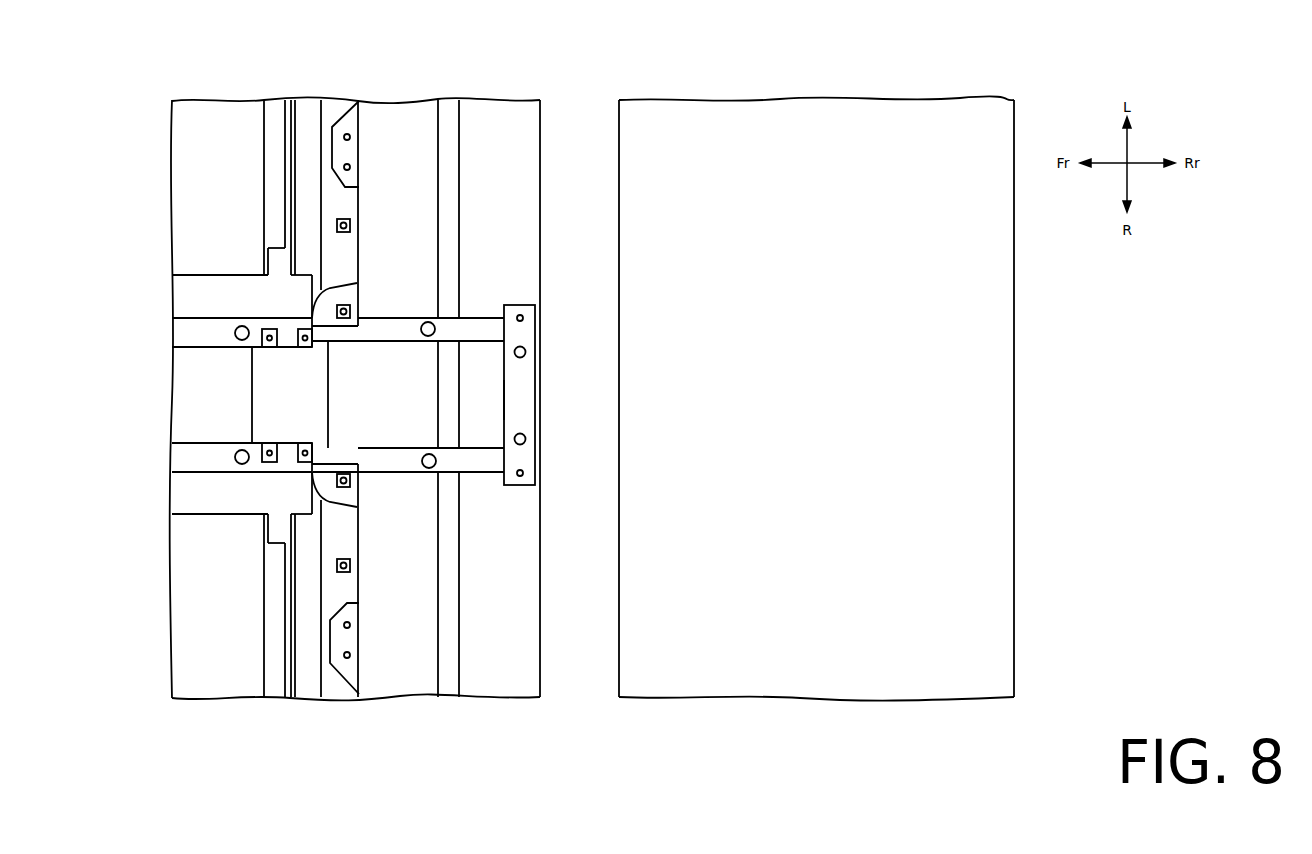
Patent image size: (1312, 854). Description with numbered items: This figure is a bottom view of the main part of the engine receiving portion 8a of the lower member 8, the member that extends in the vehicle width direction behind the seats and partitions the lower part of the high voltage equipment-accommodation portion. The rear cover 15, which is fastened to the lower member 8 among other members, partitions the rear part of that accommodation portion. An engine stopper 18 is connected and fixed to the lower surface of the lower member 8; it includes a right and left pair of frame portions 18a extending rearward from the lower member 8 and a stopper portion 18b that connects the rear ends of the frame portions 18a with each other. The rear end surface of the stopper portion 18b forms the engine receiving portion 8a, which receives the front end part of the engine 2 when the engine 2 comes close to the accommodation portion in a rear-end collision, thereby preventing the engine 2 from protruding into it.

The engine 2 is at (818, 125).
The lower member 8 is at (398, 125).
The engine receiving portion 8a is at (540, 360).
The rear cover 15 is at (497, 125).
The engine stopper 18 is at (410, 473).
The frame portions 18a is at (480, 305).
The stopper portion 18b is at (520, 399).